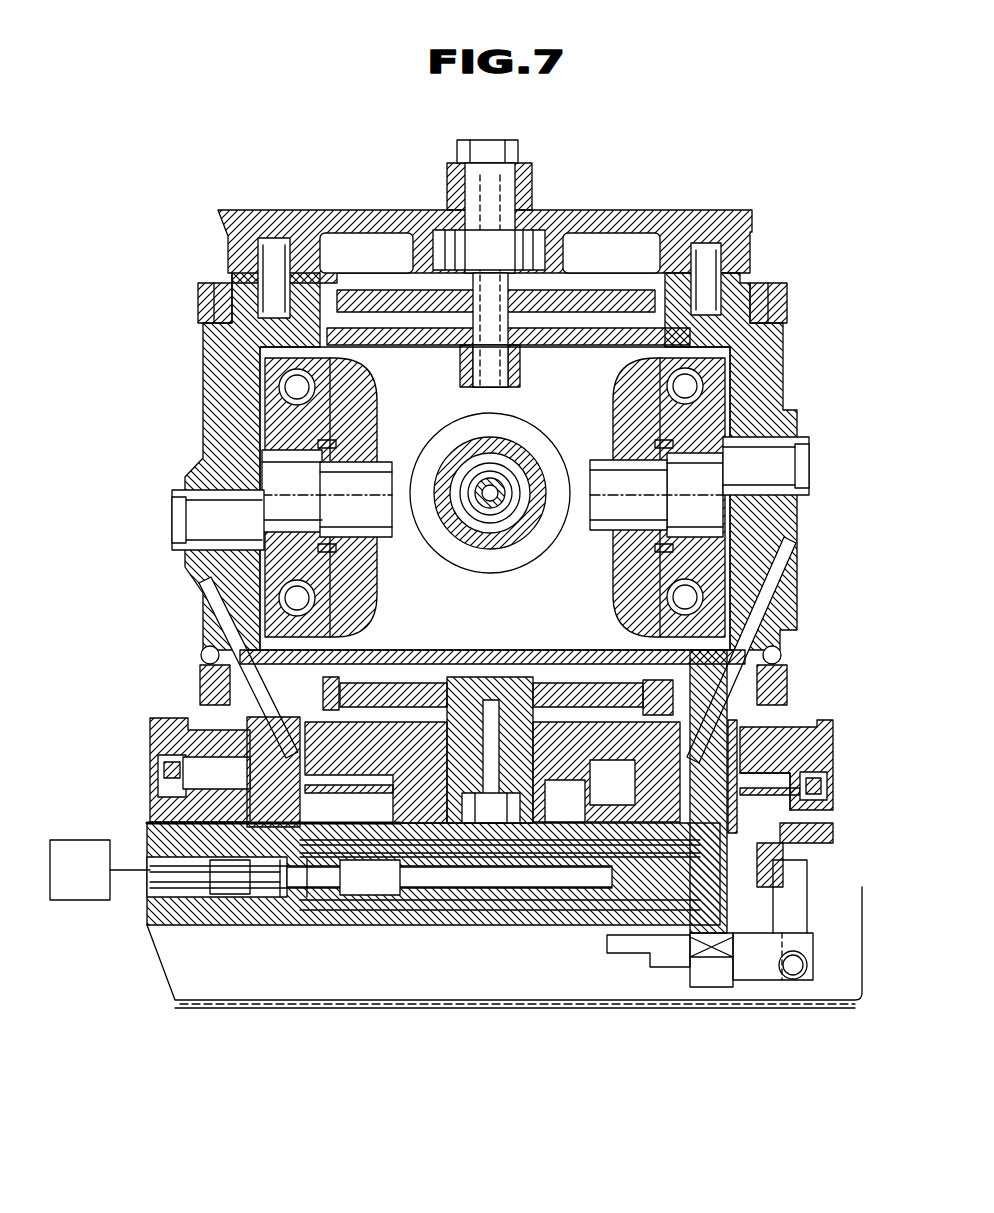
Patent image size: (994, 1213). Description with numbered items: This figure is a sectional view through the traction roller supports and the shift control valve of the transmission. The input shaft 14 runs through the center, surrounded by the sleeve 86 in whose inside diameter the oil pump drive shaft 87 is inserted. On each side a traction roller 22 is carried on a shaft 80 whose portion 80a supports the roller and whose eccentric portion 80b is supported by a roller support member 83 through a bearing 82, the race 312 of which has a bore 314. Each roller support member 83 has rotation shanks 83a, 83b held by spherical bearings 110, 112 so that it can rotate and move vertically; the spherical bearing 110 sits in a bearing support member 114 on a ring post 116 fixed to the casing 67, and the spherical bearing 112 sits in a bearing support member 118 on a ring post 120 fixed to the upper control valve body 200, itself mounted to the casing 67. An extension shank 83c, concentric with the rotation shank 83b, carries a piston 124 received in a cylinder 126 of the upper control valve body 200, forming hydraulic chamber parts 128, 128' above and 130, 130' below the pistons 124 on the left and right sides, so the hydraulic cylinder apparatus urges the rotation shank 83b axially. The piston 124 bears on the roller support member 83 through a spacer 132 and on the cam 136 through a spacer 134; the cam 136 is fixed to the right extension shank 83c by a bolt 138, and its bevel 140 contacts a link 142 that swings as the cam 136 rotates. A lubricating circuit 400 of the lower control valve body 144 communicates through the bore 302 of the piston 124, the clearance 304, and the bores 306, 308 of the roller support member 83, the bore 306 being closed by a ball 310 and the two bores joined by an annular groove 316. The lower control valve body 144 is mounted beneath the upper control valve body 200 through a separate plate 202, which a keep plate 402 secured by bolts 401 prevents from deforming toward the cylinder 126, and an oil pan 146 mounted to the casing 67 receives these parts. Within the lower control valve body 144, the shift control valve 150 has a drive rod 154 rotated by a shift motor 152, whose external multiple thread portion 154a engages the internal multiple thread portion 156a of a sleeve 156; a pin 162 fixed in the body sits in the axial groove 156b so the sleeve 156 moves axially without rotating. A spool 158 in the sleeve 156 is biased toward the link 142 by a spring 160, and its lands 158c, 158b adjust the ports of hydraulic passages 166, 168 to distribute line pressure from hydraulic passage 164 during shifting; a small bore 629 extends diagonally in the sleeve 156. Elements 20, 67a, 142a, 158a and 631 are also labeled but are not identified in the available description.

The input shaft 14 is at (478, 448).
The drive gear 20 is at (532, 420).
The traction roller 22 is at (550, 435).
The casing 67 is at (573, 215).
The nut 67a is at (567, 247).
The shaft 80 is at (398, 488).
The roller supporting portion 80a is at (406, 535).
The supported portion 80b is at (188, 508).
The bearing 82 is at (335, 376).
The roller support member 83 is at (203, 347).
The rotation shank 83a is at (256, 245).
The rotation shank 83b is at (215, 645).
The extension shank 83c is at (320, 650).
The sleeve 86 is at (508, 510).
The oil pump drive shaft 87 is at (478, 520).
The spherical bearing 110 is at (215, 283).
The spherical bearing 112 is at (210, 665).
The bearing support member 114 is at (586, 290).
The ring post 116 is at (510, 345).
The bearing support member 118 is at (582, 683).
The ring post 120 is at (520, 680).
The piston 124 is at (157, 757).
The cylinder 126 is at (160, 735).
The hydraulic chamber 128 is at (178, 733).
The hydraulic chamber 128' is at (820, 791).
The hydraulic chamber 130 is at (122, 773).
The hydraulic chamber 130' is at (867, 815).
The spacer 132 is at (772, 718).
The spacer 134 is at (605, 932).
The cam 136 is at (610, 965).
The bolt 138 is at (695, 990).
The bevel 140 is at (642, 945).
The link 142 is at (812, 890).
The pin 142a is at (795, 982).
The lower control valve body 144 is at (218, 925).
The oil pan 146 is at (380, 1008).
The shift control valve 150 is at (455, 925).
The shift motor 152 is at (72, 840).
The drive rod 154 is at (284, 924).
The external multiple thread portion 154a is at (330, 910).
The sleeve 156 is at (368, 922).
The internal multiple thread portion 156a is at (362, 925).
The axial groove 156b is at (340, 800).
The spool 158 is at (530, 925).
The bushing portion 158a is at (792, 905).
The land 158b is at (489, 925).
The land 158c is at (615, 950).
The spring 160 is at (414, 925).
The pin 162 is at (455, 825).
The hydraulic passage 164 is at (576, 822).
The hydraulic passage 166 is at (452, 822).
The hydraulic passage 168 is at (582, 825).
The upper control valve body 200 is at (833, 730).
The separate plate 202 is at (160, 824).
The bore 302 is at (718, 990).
The clearance 304 is at (255, 722).
The bore 306 is at (225, 600).
The bore 308 is at (228, 450).
The ball 310 is at (790, 545).
The race 312 is at (265, 368).
The bore 314 is at (240, 420).
The annular groove 316 is at (222, 575).
The lubricating circuit 400 is at (740, 960).
The bolts 401 is at (640, 800).
The keep plate 402 is at (566, 800).
The small bore 629 is at (440, 925).
The block 631 is at (604, 800).